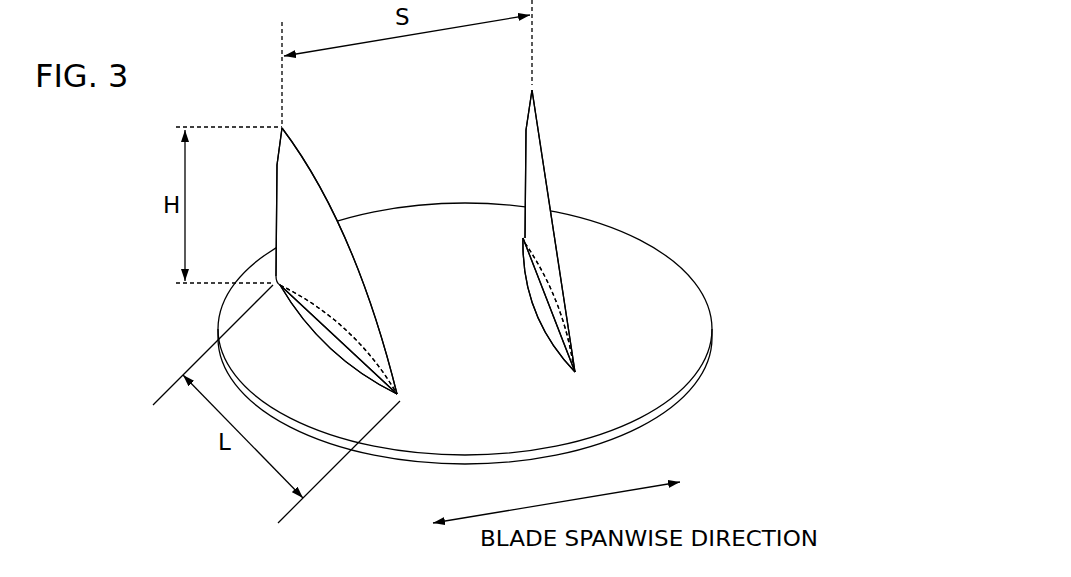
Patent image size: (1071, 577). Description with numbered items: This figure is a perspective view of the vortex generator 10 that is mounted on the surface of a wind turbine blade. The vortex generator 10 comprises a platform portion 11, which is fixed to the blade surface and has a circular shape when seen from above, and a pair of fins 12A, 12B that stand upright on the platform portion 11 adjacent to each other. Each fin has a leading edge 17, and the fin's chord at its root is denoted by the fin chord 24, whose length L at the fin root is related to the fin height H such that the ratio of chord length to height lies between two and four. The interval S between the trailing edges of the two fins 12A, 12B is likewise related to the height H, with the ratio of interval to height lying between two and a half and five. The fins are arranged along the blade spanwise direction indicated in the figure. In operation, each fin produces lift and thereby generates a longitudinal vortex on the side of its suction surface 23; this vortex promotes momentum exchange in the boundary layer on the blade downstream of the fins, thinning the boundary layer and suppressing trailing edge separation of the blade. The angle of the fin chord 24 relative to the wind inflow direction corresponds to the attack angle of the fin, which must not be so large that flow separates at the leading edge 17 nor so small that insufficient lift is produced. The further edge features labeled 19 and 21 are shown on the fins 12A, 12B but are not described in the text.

The vortex generator 10 is at (689, 61).
The platform portion 11 is at (650, 265).
The fin 12A is at (540, 127).
The fin 12B is at (290, 137).
The leading edge 17 is at (369, 298).
The leading edge of fin 19 is at (277, 177).
The trailing edge of fin 21 is at (288, 222).
The suction surface 23 is at (293, 182).
The fin chord 24 is at (395, 396).